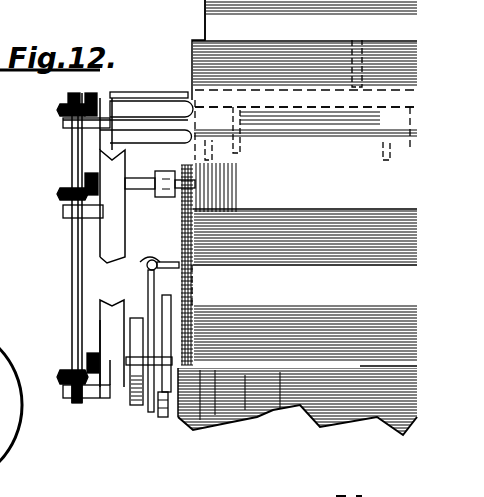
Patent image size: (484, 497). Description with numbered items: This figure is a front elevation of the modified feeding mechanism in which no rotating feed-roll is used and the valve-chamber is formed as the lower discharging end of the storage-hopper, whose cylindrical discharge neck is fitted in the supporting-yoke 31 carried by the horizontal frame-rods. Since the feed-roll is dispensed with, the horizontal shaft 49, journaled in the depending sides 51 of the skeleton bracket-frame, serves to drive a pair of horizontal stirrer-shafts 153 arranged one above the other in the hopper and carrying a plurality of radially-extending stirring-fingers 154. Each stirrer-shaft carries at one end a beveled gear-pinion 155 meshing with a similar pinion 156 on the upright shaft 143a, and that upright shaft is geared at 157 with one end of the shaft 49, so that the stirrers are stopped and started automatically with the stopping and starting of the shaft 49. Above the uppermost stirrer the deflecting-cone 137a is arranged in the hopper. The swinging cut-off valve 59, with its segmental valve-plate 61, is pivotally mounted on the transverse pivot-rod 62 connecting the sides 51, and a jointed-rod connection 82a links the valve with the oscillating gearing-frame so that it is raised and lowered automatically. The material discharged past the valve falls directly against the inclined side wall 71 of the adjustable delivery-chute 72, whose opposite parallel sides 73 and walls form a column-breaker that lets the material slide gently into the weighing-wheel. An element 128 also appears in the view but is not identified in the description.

The supporting-yoke 31 is at (160, 174).
The shaft 49 is at (122, 370).
The depending sides of skeleton bracket-frame 51 is at (118, 230).
The swinging cut-off valve 59 is at (299, 182).
The segmental valve-plate 61 is at (212, 270).
The transverse pivot-rod 62 is at (147, 268).
The inclined side wall 71 is at (86, 63).
The adjustable delivery-chute 72 is at (358, 380).
The parallel sides of delivery-chute 73 is at (178, 415).
The jointed-rod connection 82a is at (160, 420).
The bar 128 is at (306, 129).
The deflecting-cone 137a is at (260, 20).
The upright shaft 143a is at (75, 245).
The horizontal stirrer-shafts 153 is at (157, 92).
The stirring-fingers 154 is at (355, 55).
The beveled gear-pinions 155 is at (90, 96).
The pinions on upright shaft 156 is at (67, 119).
The gearing 157 is at (70, 372).